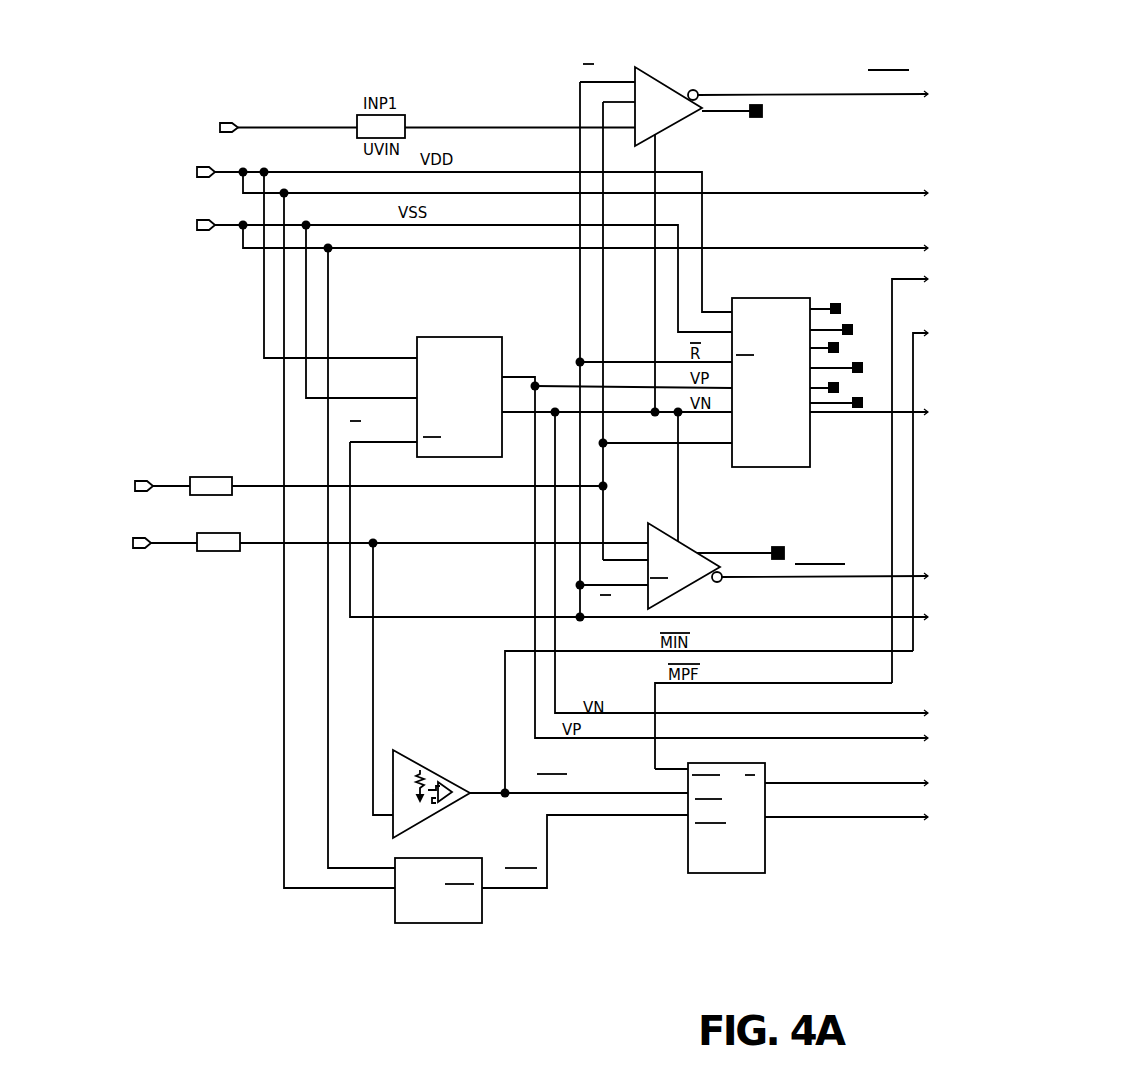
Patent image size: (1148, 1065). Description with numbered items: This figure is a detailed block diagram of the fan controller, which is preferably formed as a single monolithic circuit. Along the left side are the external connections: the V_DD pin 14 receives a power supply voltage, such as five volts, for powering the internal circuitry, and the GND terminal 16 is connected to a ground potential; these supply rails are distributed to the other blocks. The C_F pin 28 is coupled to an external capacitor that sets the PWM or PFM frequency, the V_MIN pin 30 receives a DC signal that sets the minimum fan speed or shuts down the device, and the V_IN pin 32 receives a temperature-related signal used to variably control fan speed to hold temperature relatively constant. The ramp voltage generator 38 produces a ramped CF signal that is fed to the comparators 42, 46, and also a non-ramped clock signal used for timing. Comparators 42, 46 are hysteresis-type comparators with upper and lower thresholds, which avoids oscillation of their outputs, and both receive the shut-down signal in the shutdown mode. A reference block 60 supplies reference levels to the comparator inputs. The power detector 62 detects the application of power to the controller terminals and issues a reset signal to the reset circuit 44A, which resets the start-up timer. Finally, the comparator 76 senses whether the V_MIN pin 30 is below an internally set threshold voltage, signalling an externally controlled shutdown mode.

The V_DD pin 14 is at (197, 180).
The GND terminal 16 is at (206, 231).
The C_F pin 28 is at (140, 481).
The V_MIN pin 30 is at (139, 538).
The V_IN pin 32 is at (229, 122).
The ramp voltage generator 38 is at (775, 298).
The comparator 42 is at (637, 68).
The reset circuit 44A is at (765, 843).
The comparator 46 is at (700, 540).
The voltage reference UREF (T42VREF2) 60 is at (497, 337).
The power detector 62 is at (482, 920).
The comparator 76 is at (406, 755).